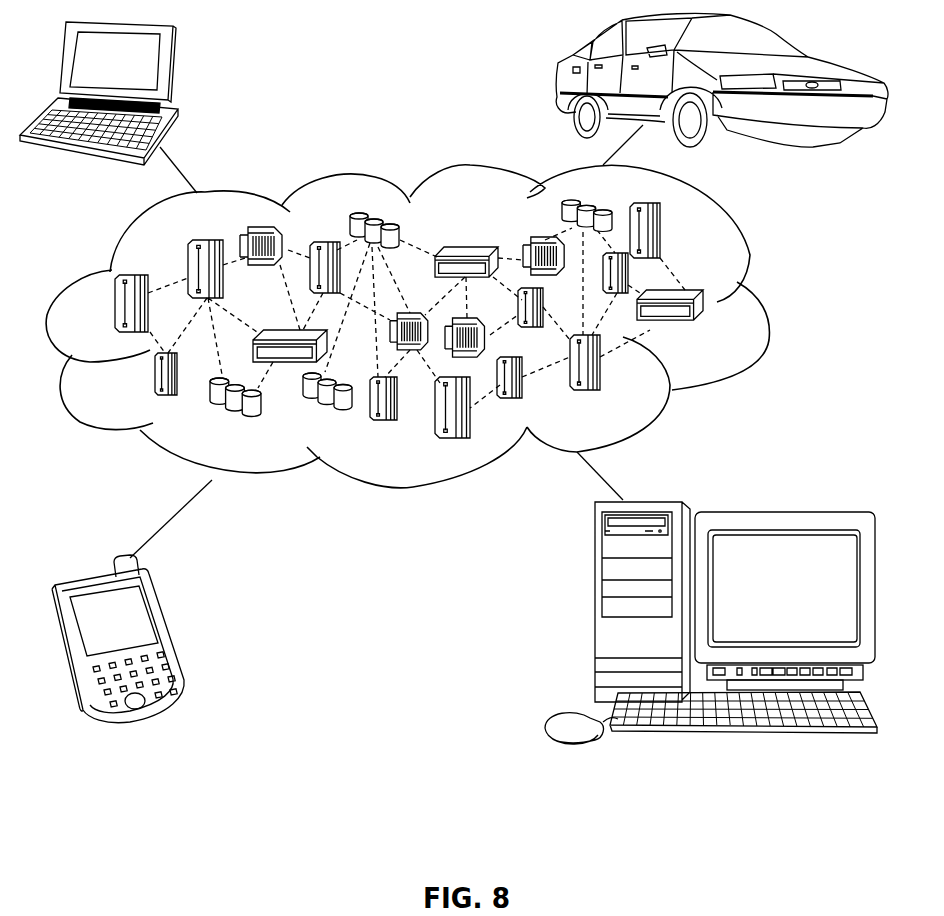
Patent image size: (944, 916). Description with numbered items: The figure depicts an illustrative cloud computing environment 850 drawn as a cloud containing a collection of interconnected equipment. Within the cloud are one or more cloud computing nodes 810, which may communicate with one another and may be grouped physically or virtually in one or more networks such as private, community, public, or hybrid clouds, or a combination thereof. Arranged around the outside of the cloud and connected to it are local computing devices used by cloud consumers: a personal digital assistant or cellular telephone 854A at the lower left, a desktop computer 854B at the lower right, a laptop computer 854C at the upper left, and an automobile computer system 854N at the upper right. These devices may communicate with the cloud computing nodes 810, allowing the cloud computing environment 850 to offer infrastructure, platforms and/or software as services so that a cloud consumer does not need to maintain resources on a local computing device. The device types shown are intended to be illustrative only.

The cloud computing environment 850 is at (747, 263).
The cloud computing nodes 810 is at (722, 325).
The personal digital assistant or cellular telephone 854A is at (167, 632).
The desktop computer 854B is at (595, 612).
The laptop computer 854C is at (177, 67).
The automobile computer system 854N is at (570, 67).